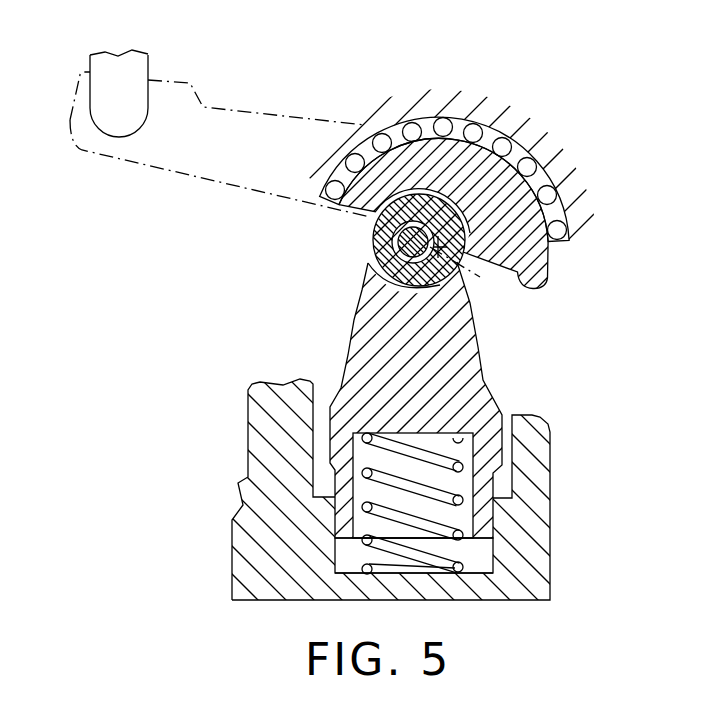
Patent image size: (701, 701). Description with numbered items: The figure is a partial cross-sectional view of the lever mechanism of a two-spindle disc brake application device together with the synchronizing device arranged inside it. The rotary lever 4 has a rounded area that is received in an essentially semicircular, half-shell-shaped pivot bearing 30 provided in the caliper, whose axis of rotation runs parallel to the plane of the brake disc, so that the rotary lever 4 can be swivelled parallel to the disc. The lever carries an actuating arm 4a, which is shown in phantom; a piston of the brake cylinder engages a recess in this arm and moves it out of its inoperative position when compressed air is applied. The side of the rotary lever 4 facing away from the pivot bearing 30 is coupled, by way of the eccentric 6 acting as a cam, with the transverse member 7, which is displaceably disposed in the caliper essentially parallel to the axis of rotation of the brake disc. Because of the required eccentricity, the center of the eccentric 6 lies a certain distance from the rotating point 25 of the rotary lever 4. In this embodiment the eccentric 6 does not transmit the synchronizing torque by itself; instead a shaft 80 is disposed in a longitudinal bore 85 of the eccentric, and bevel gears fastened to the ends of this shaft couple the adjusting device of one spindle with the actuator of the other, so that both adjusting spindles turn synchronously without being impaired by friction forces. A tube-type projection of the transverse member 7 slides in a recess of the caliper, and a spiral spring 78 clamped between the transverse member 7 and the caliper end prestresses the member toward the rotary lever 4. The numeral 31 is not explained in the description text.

The rotary lever 4 is at (555, 262).
The actuating arm 4a is at (238, 103).
The pivot bearing 30 is at (381, 143).
The pivot shaft 31 is at (373, 220).
The eccentric 6 is at (373, 243).
The shaft 80 is at (366, 263).
The longitudinal bore 85 is at (360, 293).
The transverse member 7 is at (373, 355).
The rotating point of the rotary lever 25 is at (470, 270).
The spiral spring 78 is at (445, 557).